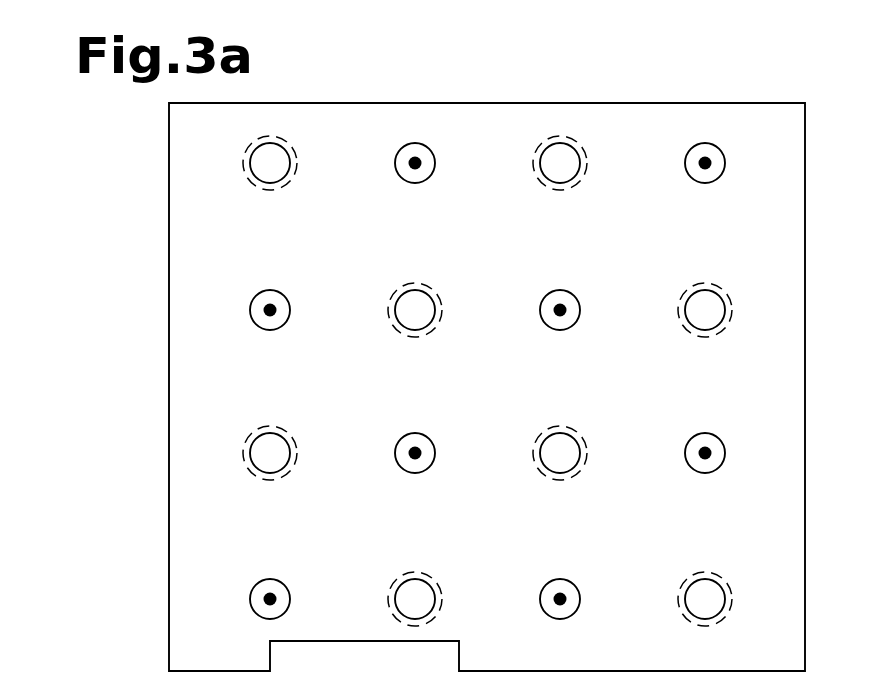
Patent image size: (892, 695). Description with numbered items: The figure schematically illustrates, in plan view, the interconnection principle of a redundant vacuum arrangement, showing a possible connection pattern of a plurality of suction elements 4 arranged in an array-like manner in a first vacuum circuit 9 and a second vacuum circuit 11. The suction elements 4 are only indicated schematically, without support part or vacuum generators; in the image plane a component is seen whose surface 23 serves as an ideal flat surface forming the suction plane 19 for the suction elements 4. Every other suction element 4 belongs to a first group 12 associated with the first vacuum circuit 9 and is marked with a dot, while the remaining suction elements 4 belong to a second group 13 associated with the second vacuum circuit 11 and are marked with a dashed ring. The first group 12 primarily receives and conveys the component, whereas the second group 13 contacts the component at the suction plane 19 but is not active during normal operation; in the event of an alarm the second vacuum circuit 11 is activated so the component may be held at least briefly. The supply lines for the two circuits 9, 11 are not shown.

The suction elements 4 is at (413, 158).
The first vacuum circuit 9 is at (343, 166).
The first group of suction elements 12 is at (270, 308).
The second vacuum circuit 11 is at (489, 169).
The second group of suction elements 13 is at (418, 285).
The suction plane 19 is at (435, 387).
The surface 23 is at (215, 375).